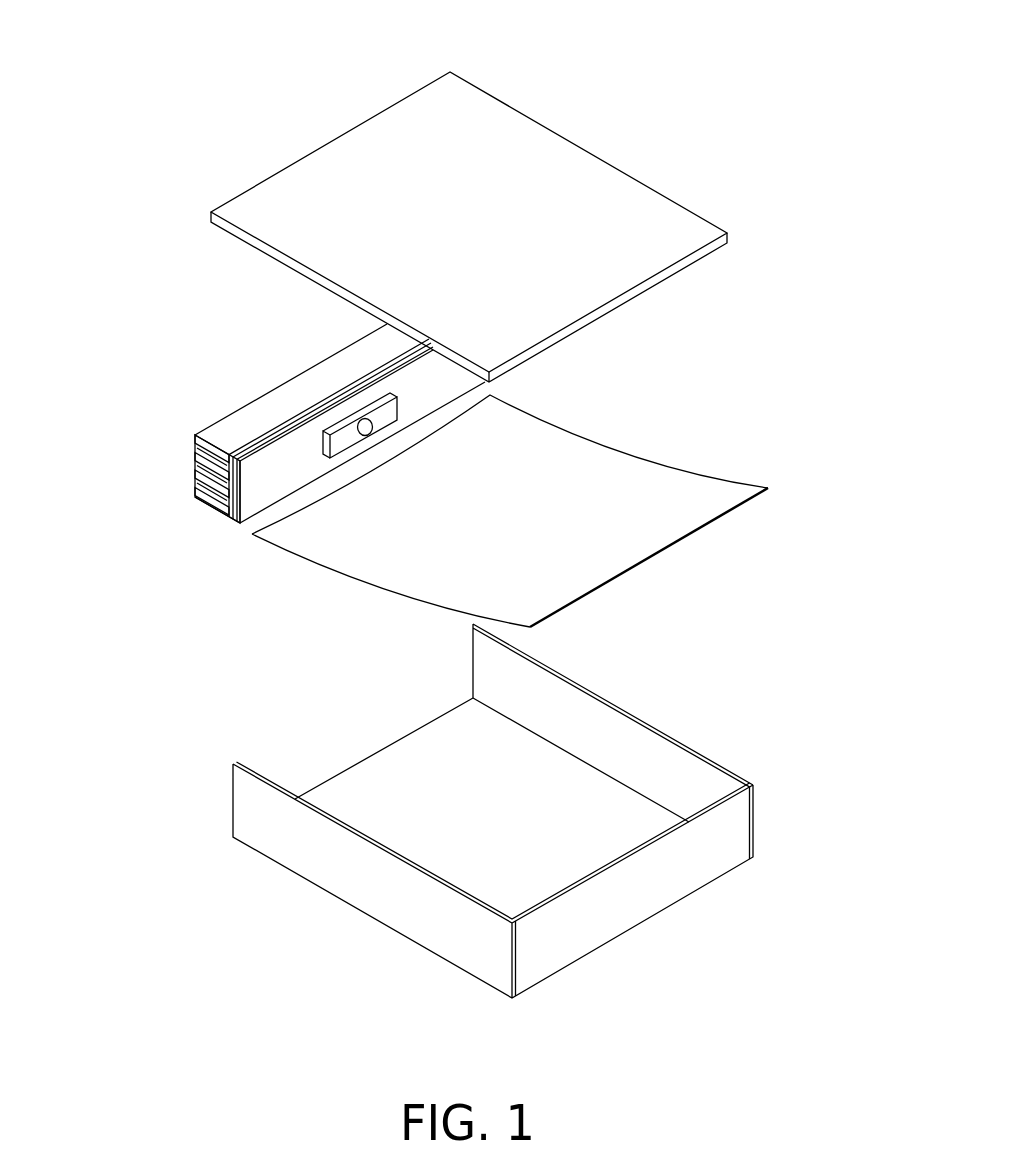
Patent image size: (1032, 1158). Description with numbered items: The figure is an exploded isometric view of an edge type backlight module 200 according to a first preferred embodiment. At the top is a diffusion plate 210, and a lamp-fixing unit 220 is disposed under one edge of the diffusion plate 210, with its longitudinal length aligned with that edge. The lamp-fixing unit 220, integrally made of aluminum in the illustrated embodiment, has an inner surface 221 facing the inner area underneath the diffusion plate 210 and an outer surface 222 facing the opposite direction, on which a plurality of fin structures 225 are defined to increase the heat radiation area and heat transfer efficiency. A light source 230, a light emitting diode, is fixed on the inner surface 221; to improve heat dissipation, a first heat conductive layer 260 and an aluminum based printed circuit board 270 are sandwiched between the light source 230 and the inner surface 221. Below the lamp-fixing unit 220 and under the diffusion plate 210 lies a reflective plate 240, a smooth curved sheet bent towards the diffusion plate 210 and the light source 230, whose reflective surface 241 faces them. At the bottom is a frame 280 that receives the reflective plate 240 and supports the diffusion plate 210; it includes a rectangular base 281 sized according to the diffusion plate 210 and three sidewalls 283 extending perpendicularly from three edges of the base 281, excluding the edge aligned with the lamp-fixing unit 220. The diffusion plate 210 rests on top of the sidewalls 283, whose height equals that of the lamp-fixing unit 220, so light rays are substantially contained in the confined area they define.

The edge type backlight module 200 is at (350, 33).
The diffusion plate 210 is at (680, 230).
The lamp-fixing unit 220 is at (151, 493).
The inner surface 221 is at (237, 523).
The outer surface 222 is at (217, 478).
The fin structures 225 is at (193, 458).
The light source 230 is at (343, 442).
The reflective plate 240 is at (531, 506).
The reflective surface 241 is at (607, 477).
The first heat conductive layer 260 is at (268, 430).
The aluminum based printed circuit board 270 is at (377, 367).
The frame 280 is at (544, 811).
The rectangular base 281 is at (424, 762).
The sidewalls 283 is at (702, 752).